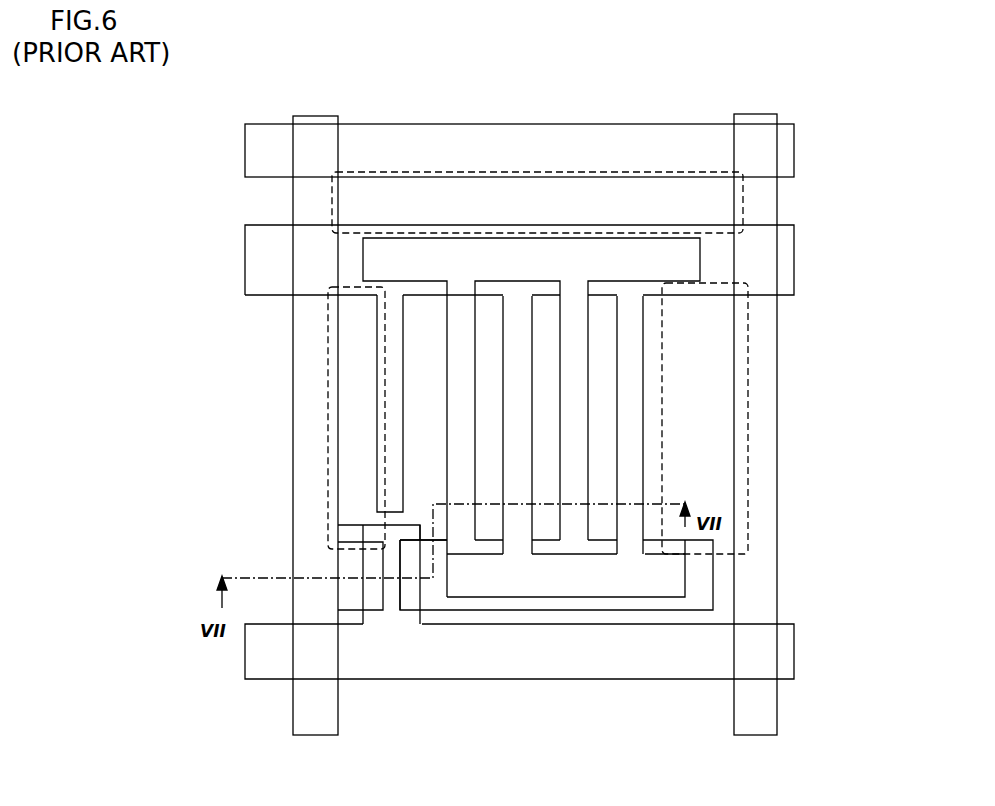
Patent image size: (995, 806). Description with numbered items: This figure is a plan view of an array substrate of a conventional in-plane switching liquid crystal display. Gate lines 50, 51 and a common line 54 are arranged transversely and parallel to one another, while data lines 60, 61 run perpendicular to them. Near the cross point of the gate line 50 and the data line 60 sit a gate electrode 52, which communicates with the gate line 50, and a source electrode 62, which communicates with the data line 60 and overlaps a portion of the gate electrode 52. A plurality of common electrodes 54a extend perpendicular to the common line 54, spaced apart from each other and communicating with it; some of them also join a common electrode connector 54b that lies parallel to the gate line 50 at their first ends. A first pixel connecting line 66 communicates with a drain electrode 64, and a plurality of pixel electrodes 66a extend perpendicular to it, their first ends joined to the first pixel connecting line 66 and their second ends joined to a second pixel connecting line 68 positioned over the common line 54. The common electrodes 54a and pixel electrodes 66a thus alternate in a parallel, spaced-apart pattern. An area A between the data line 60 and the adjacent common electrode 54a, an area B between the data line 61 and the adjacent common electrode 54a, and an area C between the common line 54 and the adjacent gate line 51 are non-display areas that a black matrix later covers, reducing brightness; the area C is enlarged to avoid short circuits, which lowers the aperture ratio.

The gate line 50 is at (582, 660).
The gate line 51 is at (632, 143).
The gate electrode 52 is at (372, 532).
The common line 54 is at (788, 262).
The common electrodes 54a is at (398, 345).
The common electrode connector 54b is at (658, 580).
The data line 60 is at (304, 500).
The data line 61 is at (772, 320).
The source electrode 62 is at (352, 585).
The drain electrode 64 is at (407, 595).
The first pixel connecting line 66 is at (702, 575).
The pixel electrodes 66a is at (578, 412).
The second pixel connecting line 68 is at (687, 257).
The area A is at (326, 392).
The area B is at (753, 375).
The area C is at (522, 172).